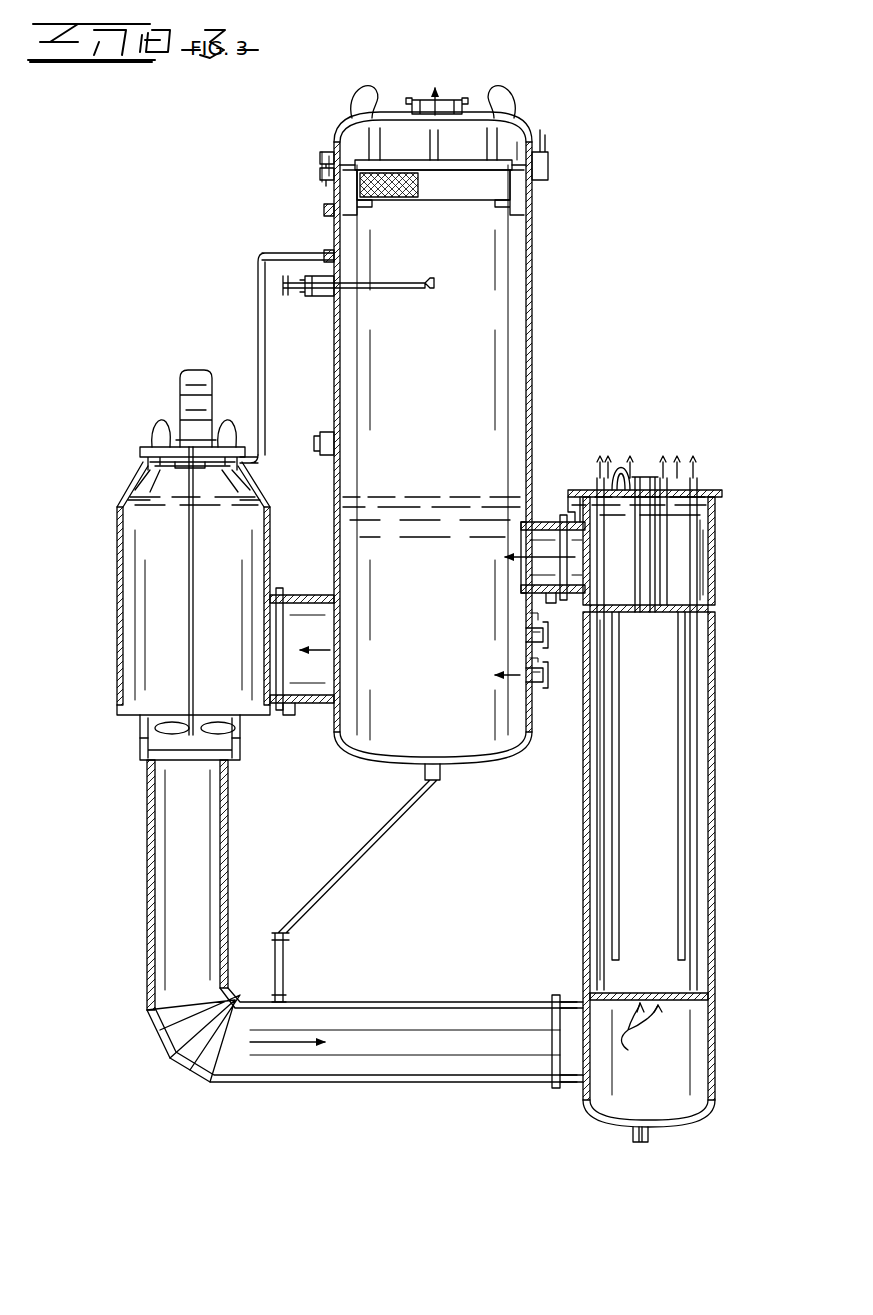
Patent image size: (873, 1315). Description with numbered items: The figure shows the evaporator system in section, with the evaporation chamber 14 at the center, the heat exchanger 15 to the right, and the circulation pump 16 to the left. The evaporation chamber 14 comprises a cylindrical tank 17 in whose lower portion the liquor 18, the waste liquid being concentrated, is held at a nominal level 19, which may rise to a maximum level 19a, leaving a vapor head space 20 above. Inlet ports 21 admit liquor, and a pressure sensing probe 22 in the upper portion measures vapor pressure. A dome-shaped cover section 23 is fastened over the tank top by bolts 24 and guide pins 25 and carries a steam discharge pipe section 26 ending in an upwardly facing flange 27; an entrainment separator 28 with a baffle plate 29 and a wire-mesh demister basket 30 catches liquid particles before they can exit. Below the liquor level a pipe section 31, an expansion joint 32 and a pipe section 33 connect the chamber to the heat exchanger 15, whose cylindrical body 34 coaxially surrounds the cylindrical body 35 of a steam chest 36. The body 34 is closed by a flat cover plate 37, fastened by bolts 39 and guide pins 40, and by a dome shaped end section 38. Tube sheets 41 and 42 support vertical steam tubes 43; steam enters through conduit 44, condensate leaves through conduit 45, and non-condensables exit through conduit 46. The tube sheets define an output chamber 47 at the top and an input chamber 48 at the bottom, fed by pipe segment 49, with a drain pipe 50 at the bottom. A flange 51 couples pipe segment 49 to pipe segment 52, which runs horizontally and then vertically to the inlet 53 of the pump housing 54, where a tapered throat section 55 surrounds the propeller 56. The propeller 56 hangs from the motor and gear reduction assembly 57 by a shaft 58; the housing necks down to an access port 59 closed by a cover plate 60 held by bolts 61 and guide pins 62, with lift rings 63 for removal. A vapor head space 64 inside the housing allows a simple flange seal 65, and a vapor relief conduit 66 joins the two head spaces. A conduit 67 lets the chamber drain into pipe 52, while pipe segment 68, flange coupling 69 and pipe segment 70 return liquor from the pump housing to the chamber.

The evaporation chamber 14 is at (535, 258).
The heat exchanger 15 is at (718, 540).
The circulation pump 16 is at (112, 640).
The cylindrical tank 17 is at (534, 362).
The liquor 18 is at (430, 643).
The predetermined level 19 is at (440, 497).
The maximum level 19a is at (380, 498).
The vapor head space 20 is at (436, 363).
The inlet port 21 is at (546, 622).
The pressure sensing probe 22 is at (412, 290).
The dome-shaped cover section 23 is at (530, 128).
The bolts 24 is at (322, 172).
The guide pins 25 is at (550, 158).
The steam discharge pipe section 26 is at (462, 108).
The upwardly facing flange 27 is at (424, 104).
The entrainment separator 28 is at (520, 192).
The baffle plate 29 is at (334, 152).
The demister basket 30 is at (442, 192).
The pipe section 31 is at (536, 521).
The expansion joint 32 is at (552, 598).
The pipe section 33 is at (520, 540).
The cylindrical body 34 is at (716, 606).
The cylindrical body of steam chest 35 is at (714, 660).
The steam chest 36 is at (648, 813).
The flat cover plate 37 is at (700, 489).
The dome shaped end section 38 is at (700, 1112).
The bolts 39 is at (568, 490).
The guide pins 40 is at (722, 510).
The tube sheet 41 is at (665, 614).
The tube sheet 42 is at (630, 1000).
The steam tubes 43 is at (625, 738).
The conduit 44 is at (652, 583).
The conduit 45 is at (603, 580).
The conduit 46 is at (706, 568).
The output chamber 47 is at (651, 723).
The input chamber 48 is at (640, 1061).
The pipe segment 49 is at (563, 1085).
The drain pipe 50 is at (648, 1132).
The flange 51 is at (548, 1090).
The pipe segment 52 is at (412, 1082).
The inlet 53 is at (148, 735).
The cylindrical housing 54 is at (117, 662).
The throat section 55 is at (238, 742).
The propeller 56 is at (205, 728).
The motor and gear reduction assembly 57 is at (186, 392).
The shaft 58 is at (194, 622).
The access port 59 is at (148, 490).
The cover plate 60 is at (150, 500).
The bolts 61 is at (150, 440).
The guide pins 62 is at (224, 430).
The lift rings 63 is at (160, 430).
The vapor head space 64 is at (195, 468).
The flange seal 65 is at (150, 452).
The vapor relief conduit 66 is at (256, 334).
The conduit 67 is at (356, 872).
The pipe segment 68 is at (272, 594).
The flange coupling 69 is at (288, 708).
The pipe segment 70 is at (306, 590).